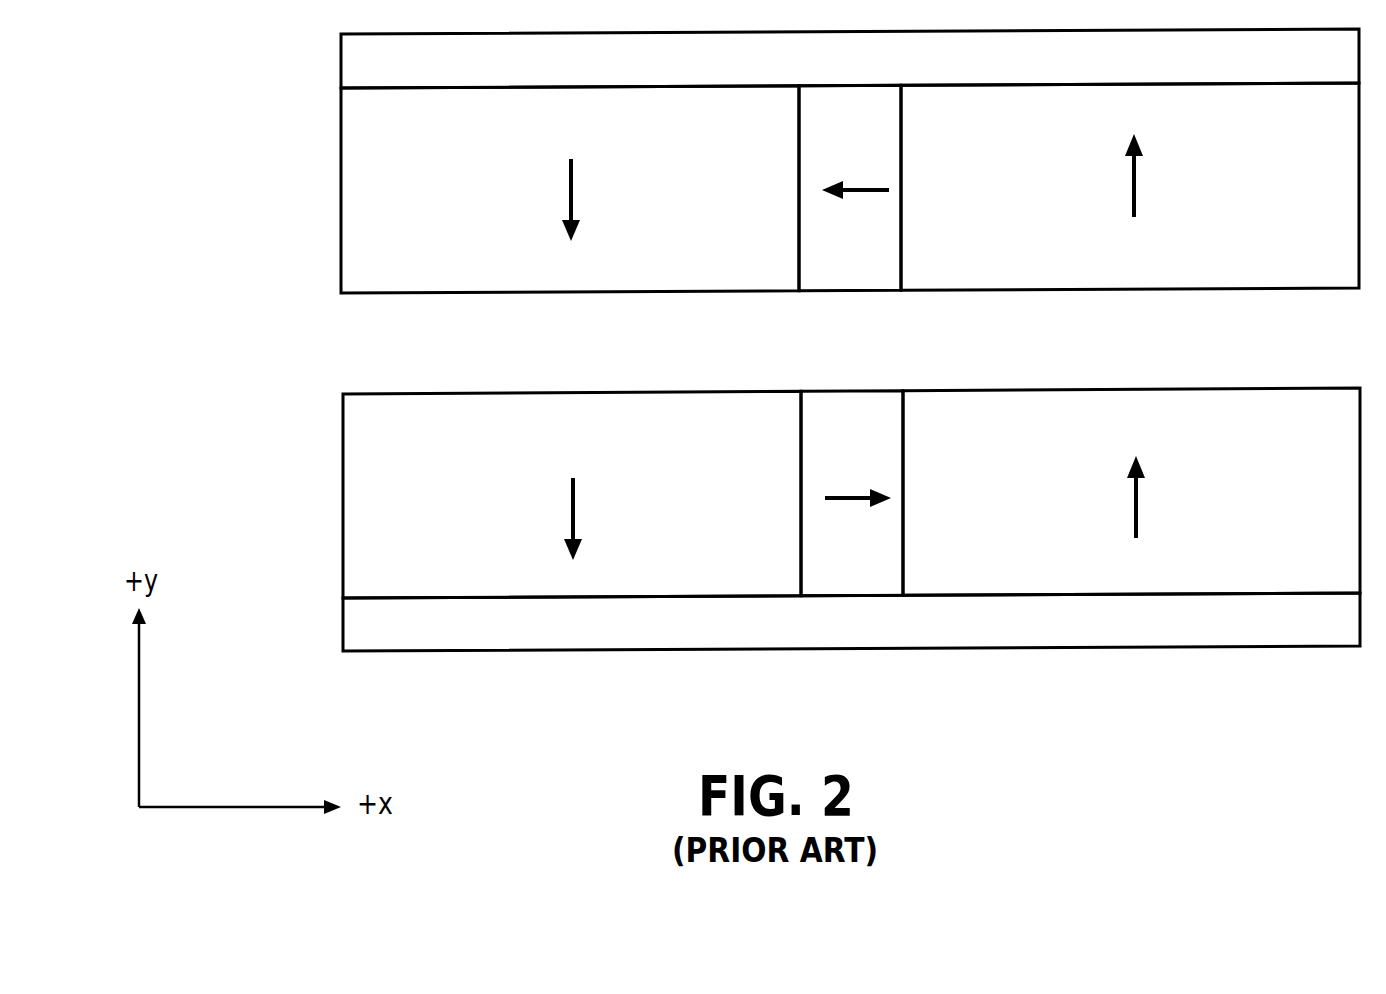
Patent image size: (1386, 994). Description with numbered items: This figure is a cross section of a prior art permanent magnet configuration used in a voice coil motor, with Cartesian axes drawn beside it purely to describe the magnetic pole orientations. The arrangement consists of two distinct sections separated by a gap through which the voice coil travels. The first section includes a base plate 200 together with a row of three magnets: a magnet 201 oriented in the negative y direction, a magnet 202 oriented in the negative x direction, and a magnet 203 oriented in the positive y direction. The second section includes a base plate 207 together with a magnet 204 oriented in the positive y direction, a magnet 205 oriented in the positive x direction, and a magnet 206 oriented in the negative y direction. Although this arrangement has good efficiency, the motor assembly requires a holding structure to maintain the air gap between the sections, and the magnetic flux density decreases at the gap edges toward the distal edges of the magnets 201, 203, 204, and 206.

The base plate 200 is at (877, 71).
The magnet 201 is at (778, 270).
The magnet 202 is at (877, 268).
The magnet 203 is at (1348, 268).
The magnet 204 is at (1348, 578).
The magnet 205 is at (881, 580).
The magnet 206 is at (784, 580).
The base plate 207 is at (878, 637).